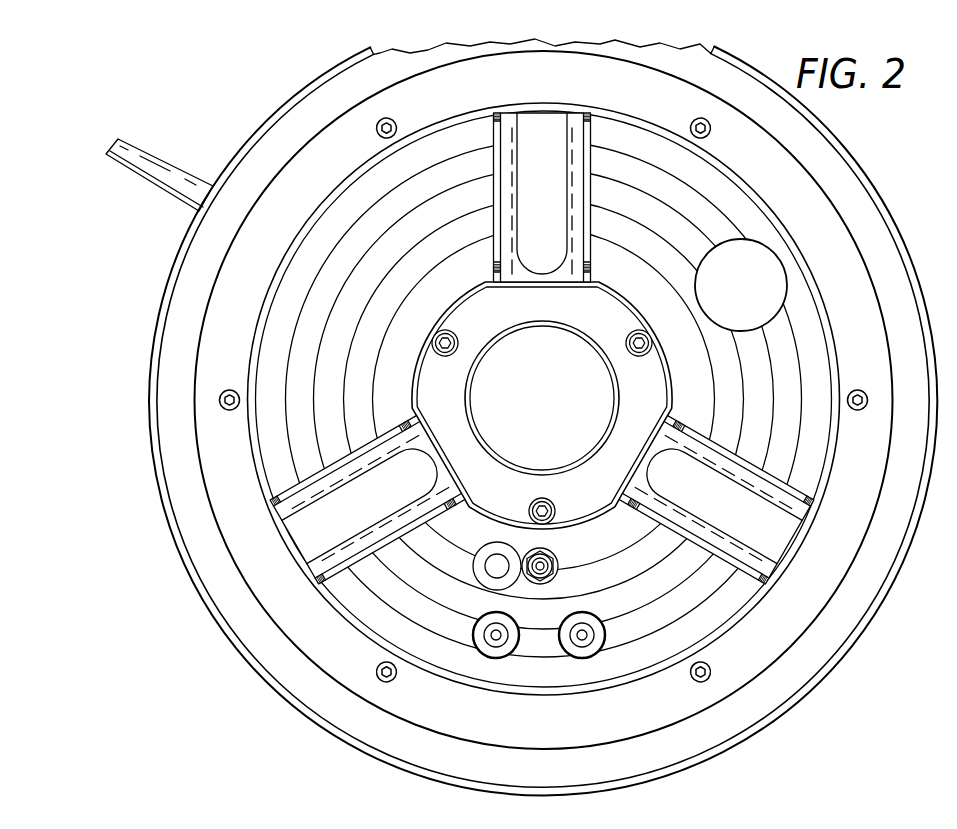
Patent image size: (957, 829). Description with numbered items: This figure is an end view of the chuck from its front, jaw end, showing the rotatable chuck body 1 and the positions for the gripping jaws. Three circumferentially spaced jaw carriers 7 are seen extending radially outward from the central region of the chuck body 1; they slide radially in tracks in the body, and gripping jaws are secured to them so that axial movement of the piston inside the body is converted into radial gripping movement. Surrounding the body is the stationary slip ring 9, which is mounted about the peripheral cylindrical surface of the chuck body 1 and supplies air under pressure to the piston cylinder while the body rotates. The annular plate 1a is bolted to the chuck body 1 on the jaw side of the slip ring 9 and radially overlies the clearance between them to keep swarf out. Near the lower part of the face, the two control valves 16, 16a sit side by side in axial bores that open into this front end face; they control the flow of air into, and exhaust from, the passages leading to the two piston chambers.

The chuck body 1 is at (776, 428).
The annular plate 1a is at (752, 662).
The jaw carriers 7 is at (556, 128).
The slip ring 9 is at (898, 525).
The control valve 16 is at (496, 662).
The control valve 16a is at (579, 662).